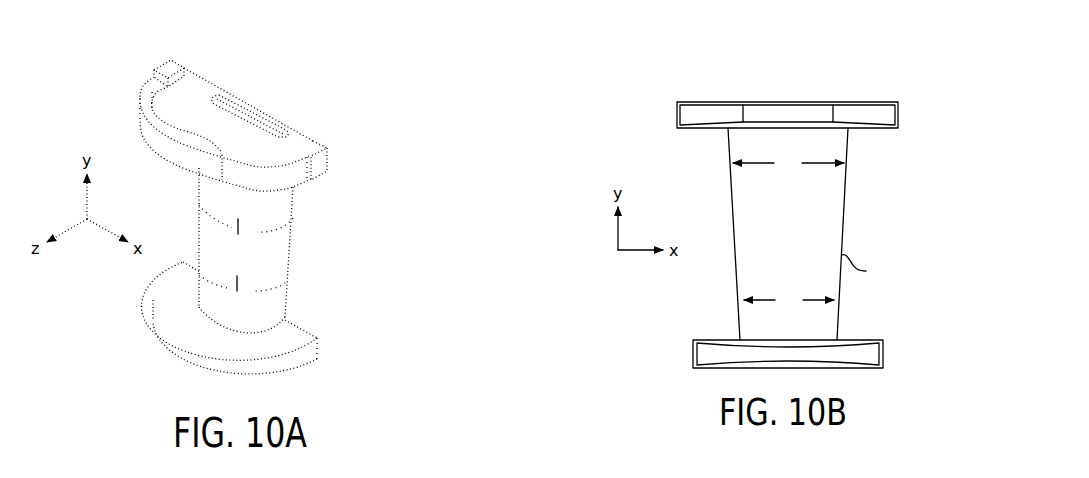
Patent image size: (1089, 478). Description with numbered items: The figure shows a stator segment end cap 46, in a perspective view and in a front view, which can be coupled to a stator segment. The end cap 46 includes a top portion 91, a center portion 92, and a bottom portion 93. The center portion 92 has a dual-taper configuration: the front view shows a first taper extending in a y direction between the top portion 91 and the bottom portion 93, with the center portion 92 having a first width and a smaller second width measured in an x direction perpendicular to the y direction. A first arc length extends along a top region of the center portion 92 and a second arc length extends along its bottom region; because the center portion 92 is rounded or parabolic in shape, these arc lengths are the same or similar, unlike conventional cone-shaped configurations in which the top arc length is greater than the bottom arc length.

In FIG. 10A, the stator segment end cap 46 is at (374, 105).
In FIG. 10B, the stator segment end cap 46 is at (934, 94).
In FIG. 10A, the top portion 91 is at (325, 164).
In FIG. 10B, the top portion 91 is at (900, 114).
In FIG. 10A, the center portion 92 is at (278, 250).
In FIG. 10B, the center portion 92 is at (833, 211).
In FIG. 10A, the bottom portion 93 is at (297, 360).
In FIG. 10B, the bottom portion 93 is at (884, 353).